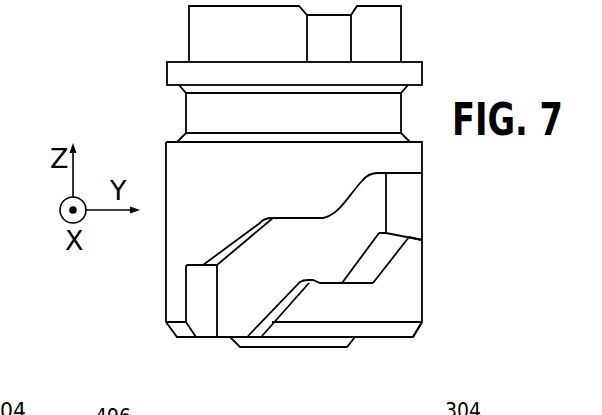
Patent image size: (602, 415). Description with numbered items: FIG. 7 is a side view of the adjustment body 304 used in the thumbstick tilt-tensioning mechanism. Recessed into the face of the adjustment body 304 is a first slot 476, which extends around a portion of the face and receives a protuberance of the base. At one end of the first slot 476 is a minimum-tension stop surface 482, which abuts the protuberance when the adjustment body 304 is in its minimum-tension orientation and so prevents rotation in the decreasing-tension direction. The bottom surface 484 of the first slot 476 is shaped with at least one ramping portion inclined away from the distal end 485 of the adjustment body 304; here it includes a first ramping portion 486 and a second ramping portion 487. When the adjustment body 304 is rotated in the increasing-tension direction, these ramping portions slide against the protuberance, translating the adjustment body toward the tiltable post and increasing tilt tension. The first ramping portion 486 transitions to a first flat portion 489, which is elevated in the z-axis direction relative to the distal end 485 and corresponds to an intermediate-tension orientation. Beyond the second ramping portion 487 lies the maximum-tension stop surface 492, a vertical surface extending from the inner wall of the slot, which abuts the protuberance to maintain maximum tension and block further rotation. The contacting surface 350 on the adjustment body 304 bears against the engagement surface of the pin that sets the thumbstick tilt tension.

The adjustment body 304 is at (136, 82).
The minimum-tension stop surface 482 is at (200, 293).
The bottom surface 484 is at (306, 250).
The first ramping portion 486 is at (275, 312).
The first flat portion 489 is at (343, 282).
The maximum-tension stop surface 492 is at (407, 208).
The second ramping portion 487 is at (378, 258).
The distal end 485 is at (383, 338).
The first slot 476 is at (234, 316).
The contacting surface 350 is at (293, 350).